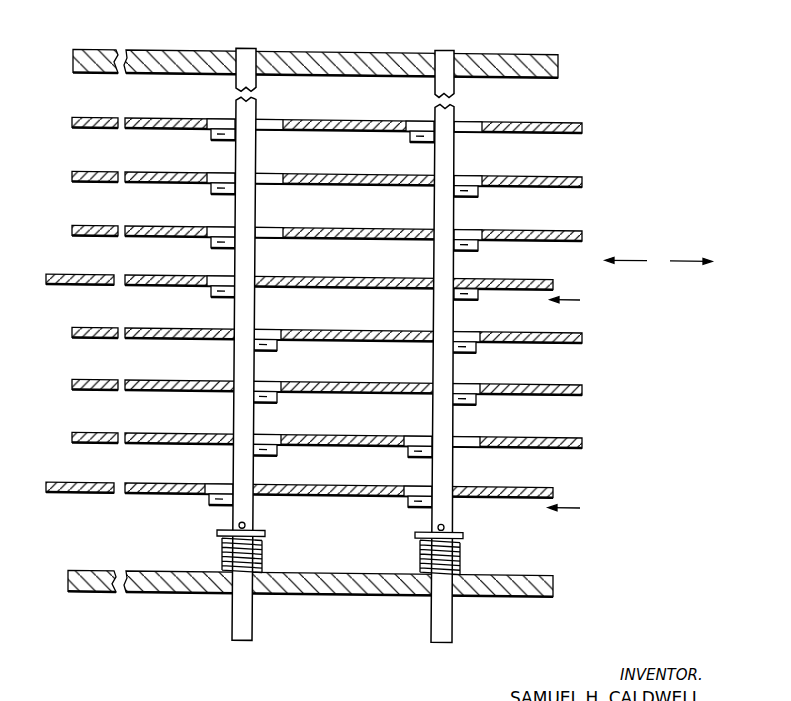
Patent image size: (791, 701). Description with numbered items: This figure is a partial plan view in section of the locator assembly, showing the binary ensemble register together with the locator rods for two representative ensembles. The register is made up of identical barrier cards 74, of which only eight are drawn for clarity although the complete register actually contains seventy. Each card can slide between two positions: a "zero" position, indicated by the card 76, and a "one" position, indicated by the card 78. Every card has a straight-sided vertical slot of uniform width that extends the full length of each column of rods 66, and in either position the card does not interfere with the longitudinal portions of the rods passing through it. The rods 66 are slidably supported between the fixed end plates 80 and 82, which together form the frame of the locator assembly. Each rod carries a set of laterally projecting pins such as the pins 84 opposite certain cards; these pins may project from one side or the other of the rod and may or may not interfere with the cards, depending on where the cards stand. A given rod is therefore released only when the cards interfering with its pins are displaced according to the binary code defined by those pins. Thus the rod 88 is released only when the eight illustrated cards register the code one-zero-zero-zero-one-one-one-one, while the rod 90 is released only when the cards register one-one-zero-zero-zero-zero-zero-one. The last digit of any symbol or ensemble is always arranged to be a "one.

The rods 66 is at (379, 359).
The barrier cards 74 is at (590, 110).
The card 76 is at (582, 435).
The card 78 is at (324, 499).
The fixed end plate 80 is at (497, 52).
The fixed end plate 82 is at (483, 571).
The pins 84 is at (207, 498).
The rod 88 is at (238, 602).
The rod 90 is at (445, 618).